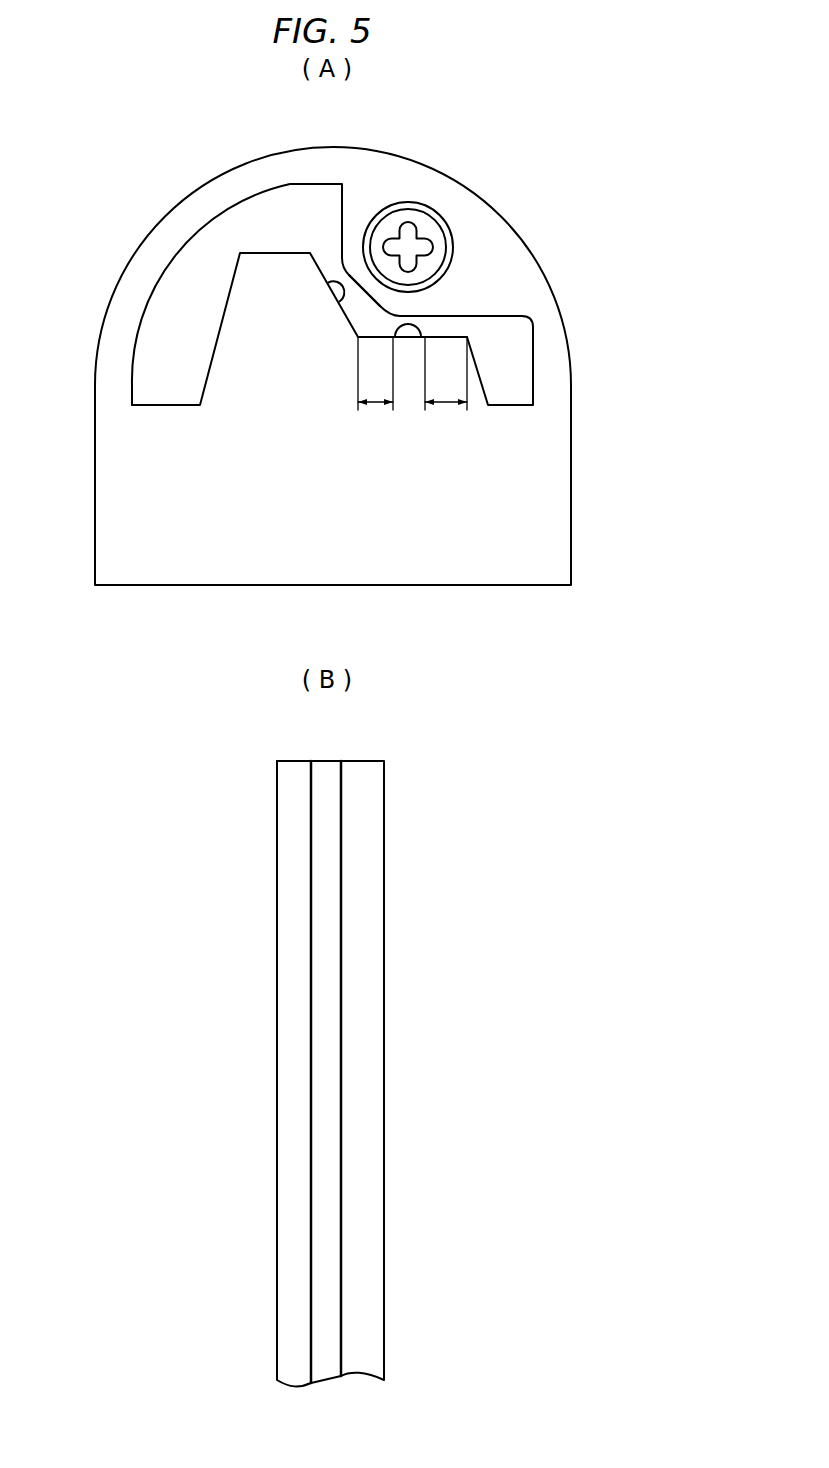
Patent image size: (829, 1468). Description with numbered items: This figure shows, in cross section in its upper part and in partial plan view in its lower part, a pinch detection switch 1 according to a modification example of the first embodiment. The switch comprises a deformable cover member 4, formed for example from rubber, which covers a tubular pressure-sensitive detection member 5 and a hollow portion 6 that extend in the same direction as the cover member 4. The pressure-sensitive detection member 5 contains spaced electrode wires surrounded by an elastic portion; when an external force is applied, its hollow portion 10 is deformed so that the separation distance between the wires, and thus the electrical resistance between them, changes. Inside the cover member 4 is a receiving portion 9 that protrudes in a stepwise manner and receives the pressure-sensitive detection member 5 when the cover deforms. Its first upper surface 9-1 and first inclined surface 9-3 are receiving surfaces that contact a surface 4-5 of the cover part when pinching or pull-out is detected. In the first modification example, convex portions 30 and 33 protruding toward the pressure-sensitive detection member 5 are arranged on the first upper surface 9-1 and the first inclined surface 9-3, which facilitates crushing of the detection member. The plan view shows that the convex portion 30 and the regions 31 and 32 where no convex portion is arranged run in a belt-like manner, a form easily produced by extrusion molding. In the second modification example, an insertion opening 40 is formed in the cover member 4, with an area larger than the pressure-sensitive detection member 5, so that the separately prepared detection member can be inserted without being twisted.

The pinch detection switch 1 is at (588, 217).
The cover member 4 is at (574, 388).
The pressure-sensitive detection member 5 is at (444, 228).
The hollow portion 6 is at (190, 290).
The receiving portion 9 is at (240, 337).
The first upper surface 9-1 is at (462, 334).
The first inclined surface 9-3 is at (327, 266).
The hollow portion 10 is at (411, 240).
The convex portion 30 is at (420, 331).
The region where no convex portion is arranged 31 is at (300, 780).
The region where no convex portion is arranged 32 is at (366, 780).
The convex portion 33 is at (348, 288).
The insertion opening 40 is at (432, 212).
The surface of the cover part 4-5 is at (372, 313).